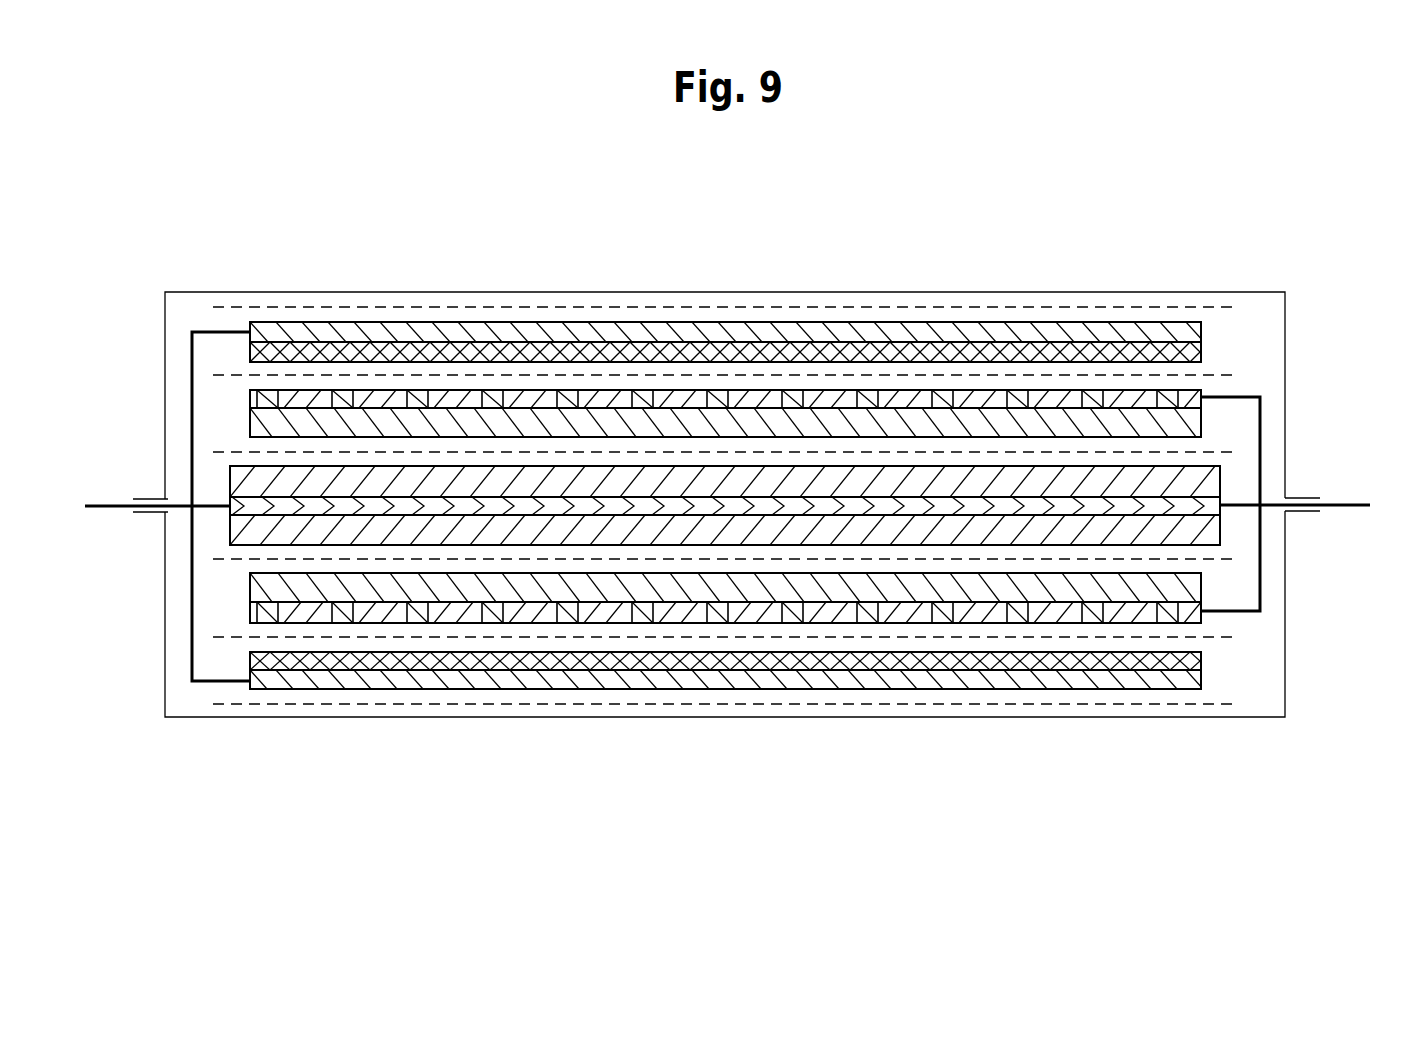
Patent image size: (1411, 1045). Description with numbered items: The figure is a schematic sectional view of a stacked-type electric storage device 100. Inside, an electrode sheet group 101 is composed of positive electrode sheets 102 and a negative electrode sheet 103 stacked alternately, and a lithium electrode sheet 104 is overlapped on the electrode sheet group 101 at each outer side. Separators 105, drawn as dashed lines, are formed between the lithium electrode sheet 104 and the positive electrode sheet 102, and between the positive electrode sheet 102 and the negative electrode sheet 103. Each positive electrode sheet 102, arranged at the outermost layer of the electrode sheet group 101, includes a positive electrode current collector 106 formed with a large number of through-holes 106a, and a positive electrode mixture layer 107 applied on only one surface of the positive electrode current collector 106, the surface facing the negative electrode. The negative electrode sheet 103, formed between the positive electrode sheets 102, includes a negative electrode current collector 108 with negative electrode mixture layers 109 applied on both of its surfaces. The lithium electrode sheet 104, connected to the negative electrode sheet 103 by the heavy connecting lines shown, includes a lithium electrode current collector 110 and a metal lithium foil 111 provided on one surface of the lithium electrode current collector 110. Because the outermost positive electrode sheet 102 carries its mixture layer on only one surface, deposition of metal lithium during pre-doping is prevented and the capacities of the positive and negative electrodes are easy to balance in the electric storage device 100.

The electric storage device 100 is at (727, 493).
The electrode sheet group 101 is at (1262, 320).
The positive electrode sheet 102 is at (629, 505).
The negative electrode sheet 103 is at (725, 640).
The lithium electrode sheet 104 is at (823, 506).
The separator 105 is at (233, 375).
The positive electrode current collector 106 is at (655, 505).
The through-hole 106a is at (568, 402).
The positive electrode mixture layer 107 is at (270, 422).
The negative electrode current collector 108 is at (1063, 505).
The negative electrode mixture layer 109 is at (1028, 480).
The lithium electrode current collector 110 is at (1190, 329).
The metal lithium foil 111 is at (1177, 351).